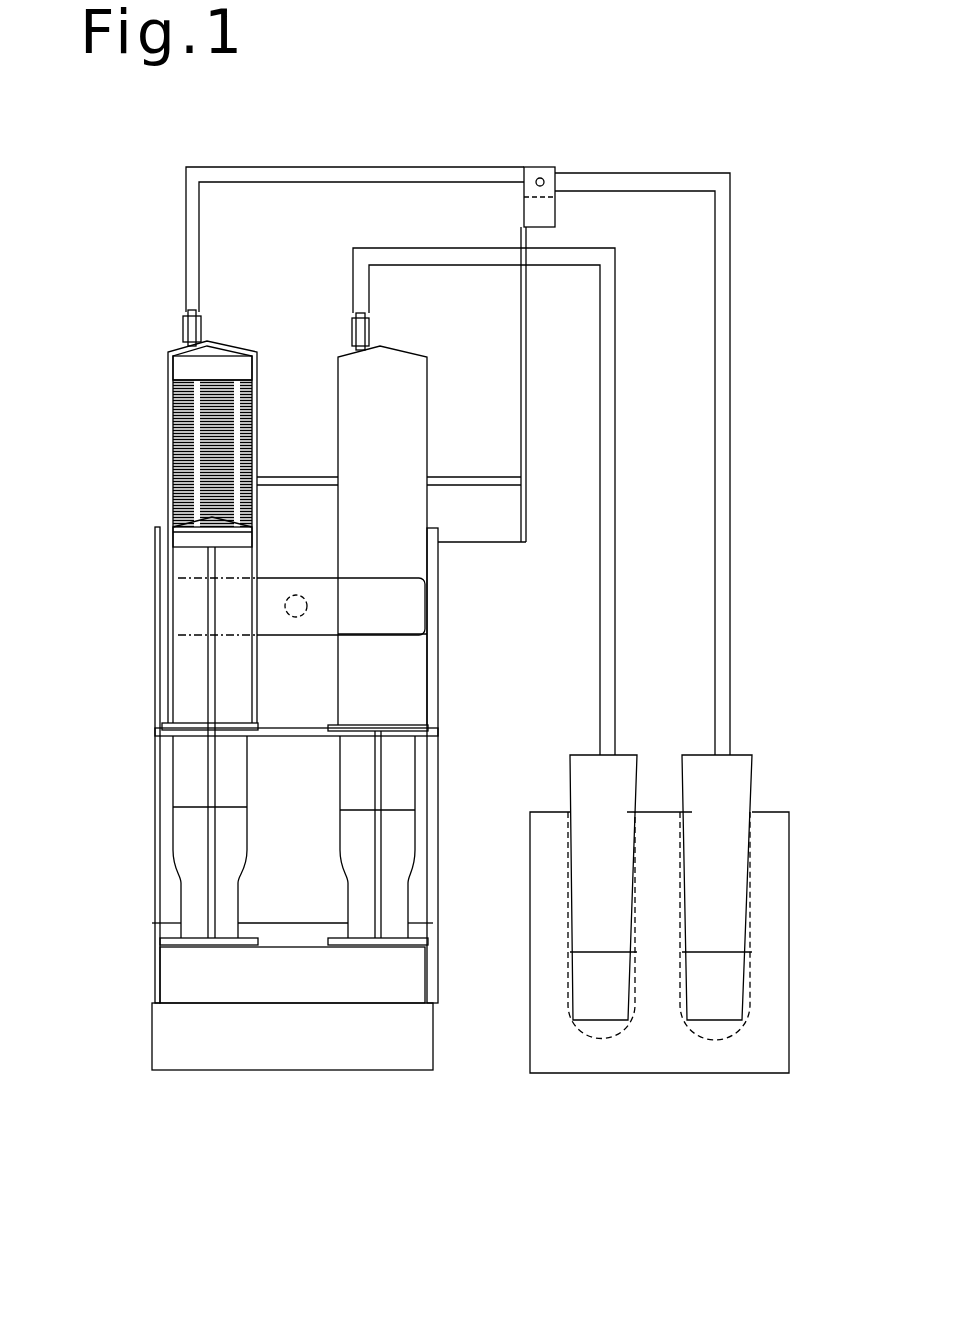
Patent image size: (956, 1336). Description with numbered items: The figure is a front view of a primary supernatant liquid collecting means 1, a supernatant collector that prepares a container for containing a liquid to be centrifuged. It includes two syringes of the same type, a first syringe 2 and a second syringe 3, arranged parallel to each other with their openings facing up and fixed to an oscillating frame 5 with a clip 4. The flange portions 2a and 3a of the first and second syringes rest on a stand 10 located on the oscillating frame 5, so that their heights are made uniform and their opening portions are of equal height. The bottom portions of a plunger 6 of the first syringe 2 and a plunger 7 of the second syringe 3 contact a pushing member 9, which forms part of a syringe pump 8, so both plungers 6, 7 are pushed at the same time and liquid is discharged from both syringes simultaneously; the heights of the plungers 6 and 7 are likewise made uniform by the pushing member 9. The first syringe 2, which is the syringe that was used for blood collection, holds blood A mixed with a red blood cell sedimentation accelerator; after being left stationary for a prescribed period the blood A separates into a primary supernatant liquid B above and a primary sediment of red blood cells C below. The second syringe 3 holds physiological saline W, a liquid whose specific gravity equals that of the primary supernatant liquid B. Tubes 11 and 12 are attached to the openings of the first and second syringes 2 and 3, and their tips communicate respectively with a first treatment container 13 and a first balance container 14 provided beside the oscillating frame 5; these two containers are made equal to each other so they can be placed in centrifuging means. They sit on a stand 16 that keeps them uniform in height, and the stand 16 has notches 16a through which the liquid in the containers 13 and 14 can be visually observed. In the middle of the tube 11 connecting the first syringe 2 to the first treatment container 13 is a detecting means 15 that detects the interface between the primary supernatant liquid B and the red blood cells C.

The primary supernatant liquid collecting means 1 is at (120, 1078).
The first syringe 2 is at (168, 363).
The flange portion of the first syringe 2a is at (170, 722).
The second syringe 3 is at (338, 372).
The flange portion of the second syringe 3a is at (350, 722).
The clip 4 is at (402, 607).
The oscillating frame 5 is at (440, 685).
The plunger of the first syringe 6 is at (187, 831).
The plunger of the second syringe 7 is at (403, 846).
The syringe pump 8 is at (332, 987).
The pushing member 9 is at (234, 987).
The stand 10 is at (257, 736).
The tube 11 is at (728, 462).
The tube 12 is at (608, 300).
The first treatment container 13 is at (733, 782).
The first balance container 14 is at (592, 778).
The detecting means 15 is at (539, 167).
The stand 16 is at (777, 885).
The notches 16a is at (745, 838).
The blood A is at (184, 380).
The primary supernatant liquid B is at (228, 370).
The red blood cells C is at (172, 455).
The physiological saline W is at (398, 382).